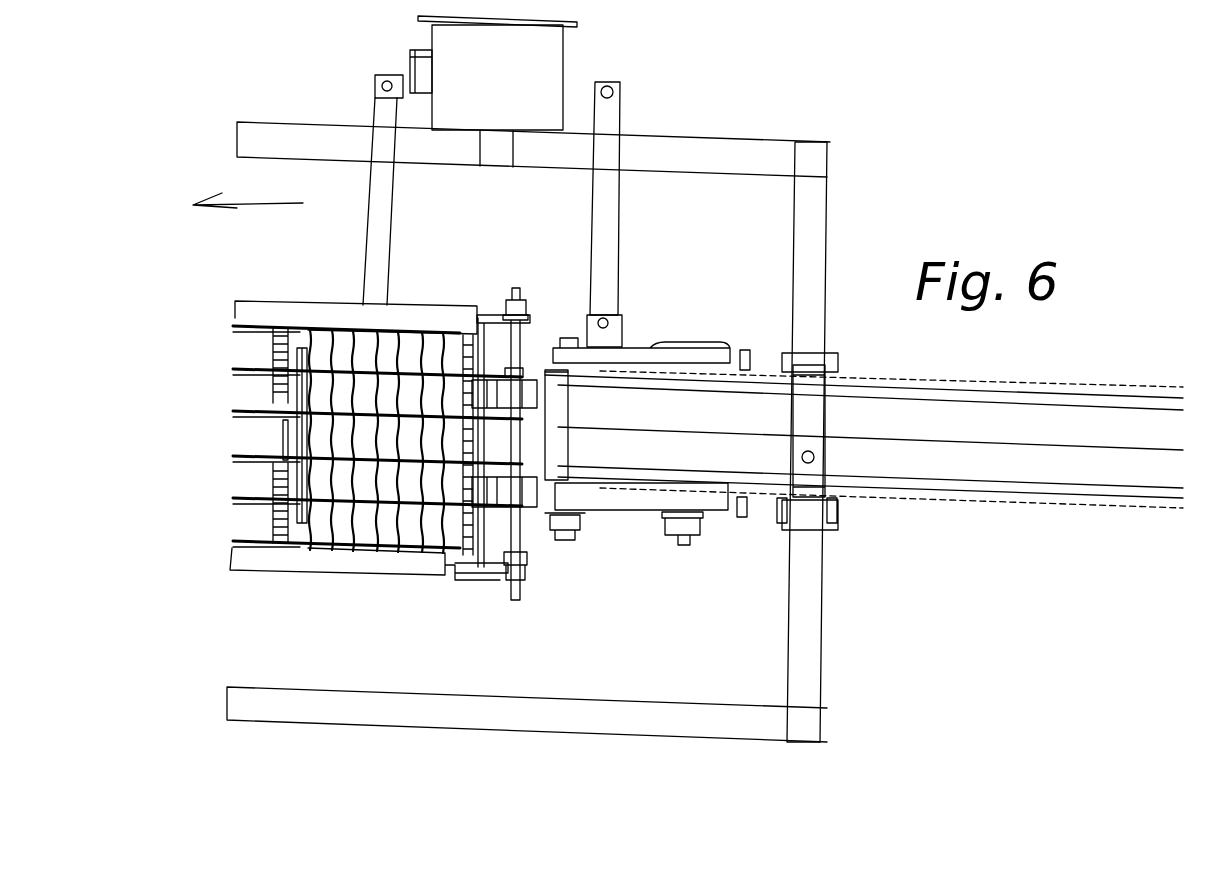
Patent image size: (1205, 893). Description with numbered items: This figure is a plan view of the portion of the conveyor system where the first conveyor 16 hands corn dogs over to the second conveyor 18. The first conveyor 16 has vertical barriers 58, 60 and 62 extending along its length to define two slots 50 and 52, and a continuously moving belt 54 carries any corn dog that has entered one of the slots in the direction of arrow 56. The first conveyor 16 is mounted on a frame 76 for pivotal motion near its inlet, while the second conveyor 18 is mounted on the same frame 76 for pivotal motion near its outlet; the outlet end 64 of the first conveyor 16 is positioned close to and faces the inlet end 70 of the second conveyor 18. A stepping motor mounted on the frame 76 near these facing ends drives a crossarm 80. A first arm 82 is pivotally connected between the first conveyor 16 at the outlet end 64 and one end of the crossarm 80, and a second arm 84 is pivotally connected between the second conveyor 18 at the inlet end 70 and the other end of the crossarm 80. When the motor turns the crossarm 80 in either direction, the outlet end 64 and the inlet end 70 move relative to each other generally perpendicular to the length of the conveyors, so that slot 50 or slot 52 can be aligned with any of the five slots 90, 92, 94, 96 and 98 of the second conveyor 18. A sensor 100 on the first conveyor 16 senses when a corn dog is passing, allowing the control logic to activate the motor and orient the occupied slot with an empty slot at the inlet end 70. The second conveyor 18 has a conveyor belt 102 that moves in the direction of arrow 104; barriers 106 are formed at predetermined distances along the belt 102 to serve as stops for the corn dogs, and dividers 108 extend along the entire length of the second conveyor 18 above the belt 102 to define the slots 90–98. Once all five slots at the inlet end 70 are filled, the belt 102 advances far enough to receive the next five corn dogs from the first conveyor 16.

The first conveyor 16 is at (623, 551).
The second conveyor 18 is at (351, 464).
The slot 50 is at (988, 420).
The slot 52 is at (1013, 538).
The belt 54 is at (950, 438).
The arrow 56 is at (870, 518).
The vertical barrier 58 is at (1047, 403).
The vertical barrier 60 is at (1082, 445).
The vertical barrier 62 is at (1123, 490).
The outlet end 64 is at (672, 330).
The inlet end 70 is at (460, 295).
The frame 76 is at (753, 136).
The crossarm 80 is at (578, 90).
The first arm 82 is at (620, 244).
The second arm 84 is at (397, 227).
The slot 90 is at (343, 337).
The slot 92 is at (328, 365).
The slot 94 is at (342, 440).
The slot 96 is at (343, 487).
The slot 98 is at (342, 528).
The sensor 100 is at (812, 405).
The conveyor belt 102 is at (396, 345).
The arrow 104 is at (279, 192).
The barrier 106 is at (280, 437).
The divider 108 is at (475, 318).